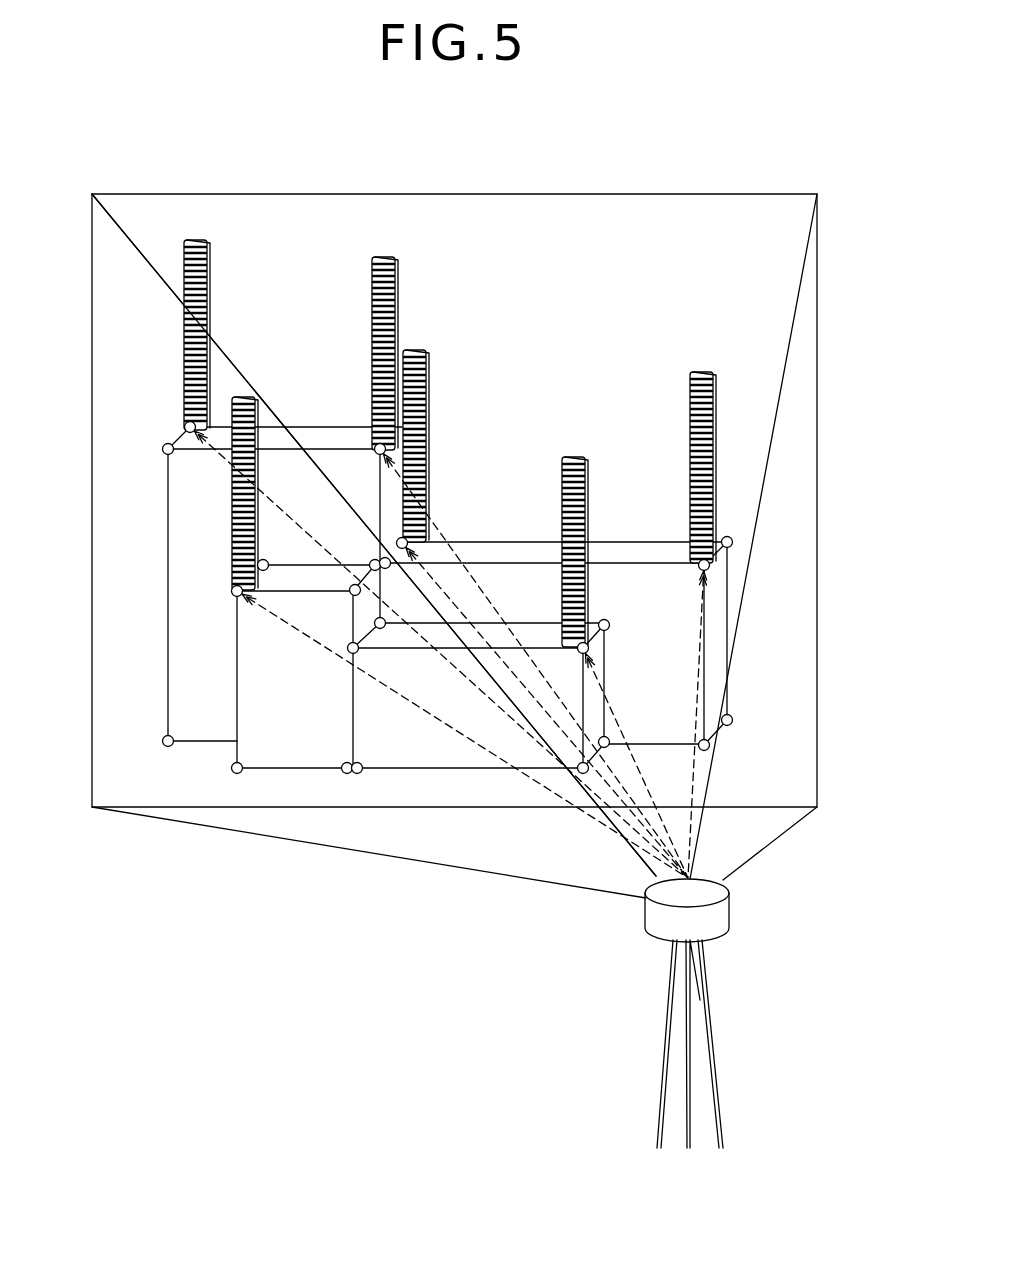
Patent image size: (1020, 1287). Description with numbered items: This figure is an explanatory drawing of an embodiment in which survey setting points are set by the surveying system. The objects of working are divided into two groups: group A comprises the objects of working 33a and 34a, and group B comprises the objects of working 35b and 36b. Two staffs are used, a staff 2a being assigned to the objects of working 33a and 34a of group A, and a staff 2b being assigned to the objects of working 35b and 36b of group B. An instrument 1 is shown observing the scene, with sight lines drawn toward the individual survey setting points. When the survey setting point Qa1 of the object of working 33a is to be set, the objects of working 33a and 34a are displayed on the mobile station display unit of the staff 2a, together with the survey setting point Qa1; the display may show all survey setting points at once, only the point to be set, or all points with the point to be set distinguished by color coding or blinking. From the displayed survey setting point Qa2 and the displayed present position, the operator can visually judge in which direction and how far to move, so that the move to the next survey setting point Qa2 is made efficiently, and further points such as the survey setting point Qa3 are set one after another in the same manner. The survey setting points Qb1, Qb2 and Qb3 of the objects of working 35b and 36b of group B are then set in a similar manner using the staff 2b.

The camera / imaging device 1 is at (741, 917).
The staff 2a is at (429, 388).
The staff 2b is at (212, 278).
The object of working 33a is at (728, 581).
The object of working 34a is at (455, 769).
The object of working 35b is at (298, 766).
The object of working 36b is at (167, 535).
The survey setting point Qa1 is at (701, 569).
The survey setting point Qa2 is at (590, 651).
The survey setting point Qa3 is at (406, 540).
The reference point Qb1 is at (233, 593).
The reference point Qb2 is at (377, 455).
The reference point Qb3 is at (184, 425).